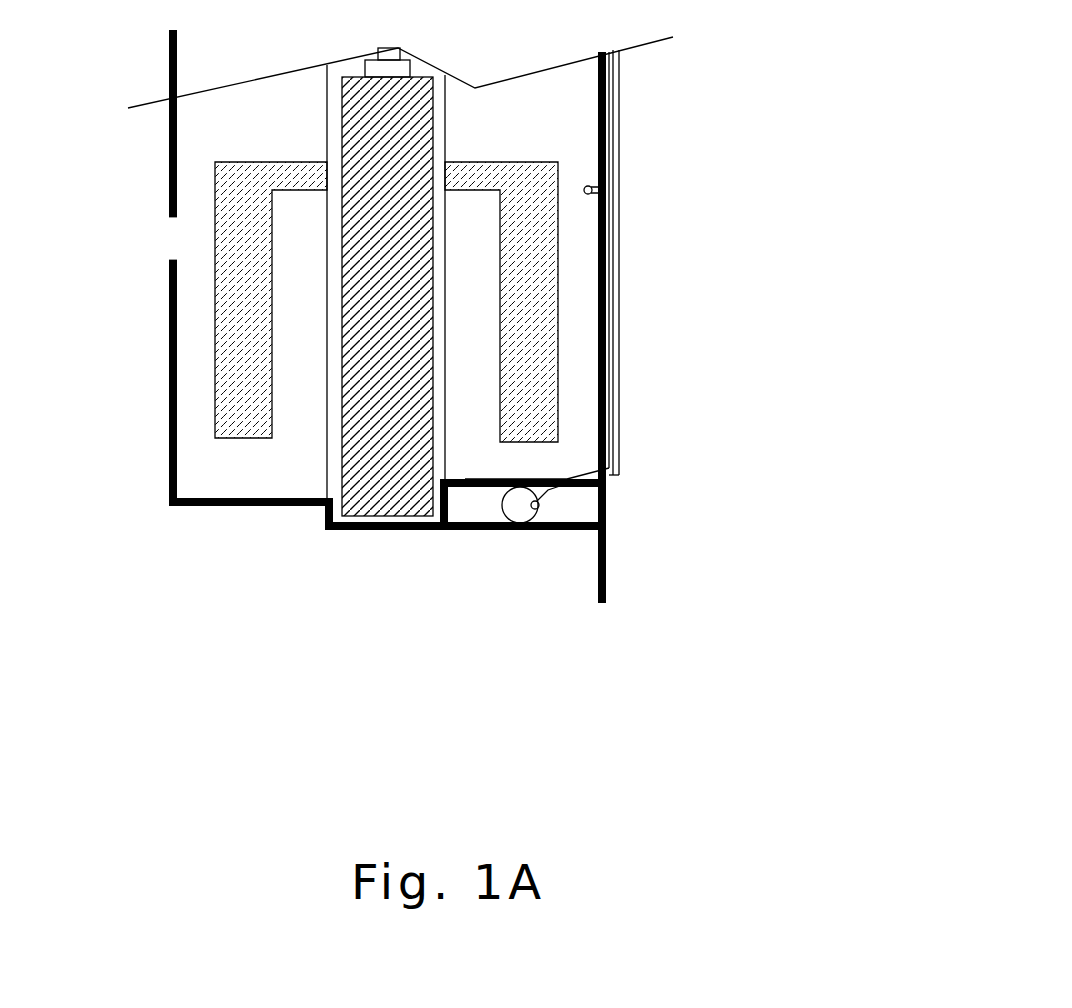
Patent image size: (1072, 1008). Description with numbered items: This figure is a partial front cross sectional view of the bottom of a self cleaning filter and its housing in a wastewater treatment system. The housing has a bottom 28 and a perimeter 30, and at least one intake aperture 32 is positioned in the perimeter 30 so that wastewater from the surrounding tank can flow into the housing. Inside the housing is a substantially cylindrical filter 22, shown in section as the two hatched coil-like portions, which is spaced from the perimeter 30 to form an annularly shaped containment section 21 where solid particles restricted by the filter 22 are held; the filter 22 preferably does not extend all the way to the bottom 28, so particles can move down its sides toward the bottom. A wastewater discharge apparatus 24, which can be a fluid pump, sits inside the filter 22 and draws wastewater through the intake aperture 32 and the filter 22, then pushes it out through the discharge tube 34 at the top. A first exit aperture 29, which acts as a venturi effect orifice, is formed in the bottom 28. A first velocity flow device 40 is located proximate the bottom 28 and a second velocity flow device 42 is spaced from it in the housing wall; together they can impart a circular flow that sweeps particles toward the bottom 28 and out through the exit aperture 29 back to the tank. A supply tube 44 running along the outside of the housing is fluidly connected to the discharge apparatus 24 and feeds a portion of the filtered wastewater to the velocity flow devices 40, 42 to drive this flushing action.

The annularly shaped containment section 21 is at (577, 368).
The filter 22 is at (272, 332).
The wastewater discharge apparatus 24 is at (382, 485).
The bottom 28 is at (255, 508).
The first exit aperture 29 is at (520, 523).
The perimeter 30 is at (168, 363).
The intake aperture 32 is at (168, 237).
The discharge tube 34 is at (388, 47).
The first velocity flow device 40 is at (545, 500).
The second velocity flow device 42 is at (605, 200).
The supply tube 44 is at (618, 150).